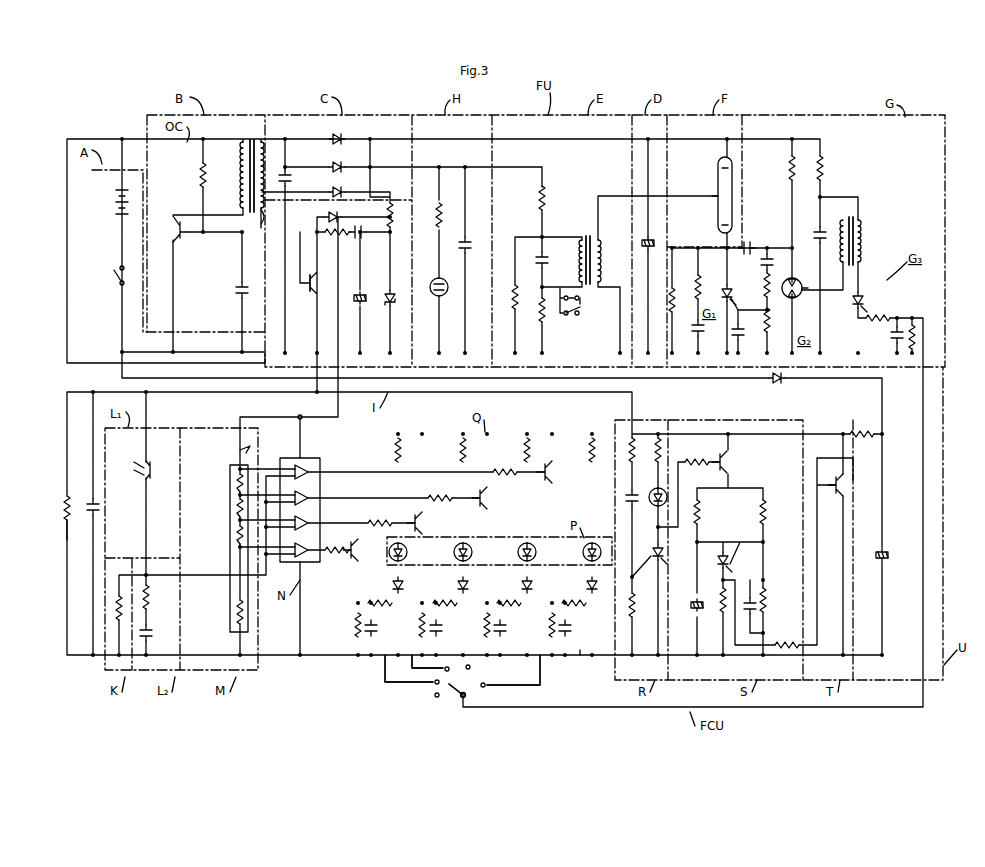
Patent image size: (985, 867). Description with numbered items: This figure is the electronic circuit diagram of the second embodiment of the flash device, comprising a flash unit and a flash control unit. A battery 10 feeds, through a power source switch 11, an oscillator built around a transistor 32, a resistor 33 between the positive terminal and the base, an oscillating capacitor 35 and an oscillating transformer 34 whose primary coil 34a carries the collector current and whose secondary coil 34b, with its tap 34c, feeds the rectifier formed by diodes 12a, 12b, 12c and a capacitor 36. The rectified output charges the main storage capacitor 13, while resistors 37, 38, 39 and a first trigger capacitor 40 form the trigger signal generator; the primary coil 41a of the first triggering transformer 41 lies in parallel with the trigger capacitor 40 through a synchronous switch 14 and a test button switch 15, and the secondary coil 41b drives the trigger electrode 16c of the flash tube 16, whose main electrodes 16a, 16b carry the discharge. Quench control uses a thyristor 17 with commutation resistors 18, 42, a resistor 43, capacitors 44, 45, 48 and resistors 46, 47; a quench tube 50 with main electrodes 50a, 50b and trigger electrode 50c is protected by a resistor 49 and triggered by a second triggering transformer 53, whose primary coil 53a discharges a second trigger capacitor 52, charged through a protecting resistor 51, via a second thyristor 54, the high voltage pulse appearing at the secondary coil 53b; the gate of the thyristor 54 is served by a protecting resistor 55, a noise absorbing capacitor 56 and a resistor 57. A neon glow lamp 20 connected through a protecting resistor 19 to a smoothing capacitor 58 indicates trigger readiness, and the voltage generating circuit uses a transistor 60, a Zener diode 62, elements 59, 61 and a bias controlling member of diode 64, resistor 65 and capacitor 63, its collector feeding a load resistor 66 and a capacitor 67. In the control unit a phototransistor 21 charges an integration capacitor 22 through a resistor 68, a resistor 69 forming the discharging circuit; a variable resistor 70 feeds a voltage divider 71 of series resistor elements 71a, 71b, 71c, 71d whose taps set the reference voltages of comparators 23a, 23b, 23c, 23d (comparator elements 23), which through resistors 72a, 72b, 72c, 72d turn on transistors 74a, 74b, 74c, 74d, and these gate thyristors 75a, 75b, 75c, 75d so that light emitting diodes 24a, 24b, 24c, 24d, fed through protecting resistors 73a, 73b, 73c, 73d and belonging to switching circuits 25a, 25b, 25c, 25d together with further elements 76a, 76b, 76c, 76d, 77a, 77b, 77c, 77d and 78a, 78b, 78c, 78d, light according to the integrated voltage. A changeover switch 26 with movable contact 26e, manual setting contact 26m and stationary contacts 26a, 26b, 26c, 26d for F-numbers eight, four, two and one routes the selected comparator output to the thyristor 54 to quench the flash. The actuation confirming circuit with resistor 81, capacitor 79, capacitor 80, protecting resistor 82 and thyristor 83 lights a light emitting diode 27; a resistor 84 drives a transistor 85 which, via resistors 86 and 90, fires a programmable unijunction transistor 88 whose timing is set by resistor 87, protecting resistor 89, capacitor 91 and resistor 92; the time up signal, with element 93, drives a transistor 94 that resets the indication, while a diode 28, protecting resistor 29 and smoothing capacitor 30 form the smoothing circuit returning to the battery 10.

The battery 10 is at (116, 206).
The power source switch 11 is at (119, 284).
The diode 12a is at (339, 139).
The diode 12b is at (339, 167).
The diode 12c is at (339, 192).
The main storage capacitor 13 is at (650, 240).
The switch 14 is at (572, 315).
The test button switch 15 is at (581, 298).
The flash tube 16 is at (732, 200).
The main current conducting electrode 16a is at (732, 160).
The electrode 16b is at (718, 230).
The trigger electrode 16c is at (717, 178).
The thyristor 17 is at (722, 292).
The commutation resistor 18 is at (747, 246).
The protecting resistor 19 is at (436, 212).
The neon glow lamp 20 is at (431, 286).
The phototransistor 21 is at (152, 470).
The integration capacitor 22 is at (149, 633).
The comparator circuit 23 is at (300, 458).
The comparator 23a is at (310, 472).
The comparator 23b is at (310, 498).
The comparator 23c is at (310, 523).
The comparator 23d is at (310, 550).
The light emitting diode 24a is at (584, 556).
The light emitting diode 24b is at (519, 556).
The light emitting diode 24c is at (455, 556).
The light emitting diode 24d is at (390, 558).
The switching circuit 25a is at (580, 656).
The switching circuit 25b is at (520, 668).
The switching circuit 25c is at (415, 672).
The switching circuit 25d is at (385, 672).
The changeover switch 26 is at (460, 702).
The stationary contact 26a is at (485, 687).
The stationary contact 26b is at (470, 668).
The stationary contact 26c is at (448, 672).
The stationary contact 26d is at (434, 684).
The movable contact 26e is at (462, 700).
The manual operation setting contact 26m is at (435, 698).
The light emitting diode 27 is at (654, 505).
The diode 28 is at (779, 383).
The protecting resistor 29 is at (862, 430).
The smoothing capacitor 30 is at (878, 560).
The transistor 32 is at (178, 232).
The resistor 33 is at (199, 180).
The oscillating transformer 34 is at (252, 140).
The primary coil 34a is at (240, 172).
The secondary coil 34b is at (263, 168).
The tap 34c is at (262, 228).
The oscillating capacitor 35 is at (236, 290).
The capacitor 36 is at (291, 178).
The resistor 37 is at (538, 200).
The by-passing resistor 38 is at (513, 304).
The resistor 39 is at (538, 316).
The first trigger capacitor 40 is at (536, 262).
The first triggering transformer 41 is at (587, 236).
The primary coil 41a is at (578, 262).
The secondary coil 41b is at (602, 262).
The commutation resistor 42 is at (673, 304).
The resistor 43 is at (696, 280).
The capacitor 44 is at (695, 332).
The capacitor 45 is at (760, 262).
The resistor 46 is at (763, 285).
The resistor 47 is at (770, 324).
The capacitor 48 is at (739, 330).
The protecting resistor 49 is at (788, 170).
The quench tube 50 is at (786, 296).
The main current conducting electrode 50a is at (788, 279).
The main current conducting electrode 50b is at (800, 295).
The trigger electrode 50c is at (796, 283).
The protecting resistor 51 is at (824, 168).
The second trigger capacitor 52 is at (817, 234).
The second triggering transformer 53 is at (853, 214).
The primary coil 53a is at (862, 240).
The secondary coil 53b is at (842, 222).
The second thyristor 54 is at (862, 300).
The protecting resistor 55 is at (878, 314).
The capacitor 56 is at (893, 336).
The resistor 57 is at (912, 324).
The smoothing capacitor 58 is at (470, 240).
The resistor 59 is at (390, 225).
The transistor 60 is at (310, 288).
The zener diode 61 is at (358, 304).
The Zener diode 62 is at (391, 306).
The capacitor 63 is at (358, 228).
The diode 64 is at (325, 214).
The resistor 65 is at (337, 237).
The load resistor 66 is at (66, 530).
The capacitor 67 is at (70, 505).
The resistor 68 is at (149, 598).
The resistor 69 is at (117, 596).
The variable resistor 70 is at (238, 452).
The voltage divider 71 is at (228, 553).
The resistor element 71a is at (236, 480).
The resistor element 71b is at (236, 507).
The resistor element 71c is at (236, 534).
The resistor element 71d is at (236, 612).
The resistor 72a is at (505, 474).
The resistor 72b is at (446, 490).
The resistor 72c is at (385, 516).
The resistor 72d is at (337, 554).
The protecting resistor 73a is at (589, 452).
The protecting resistor 73b is at (524, 452).
The protecting resistor 73c is at (460, 452).
The protecting resistor 73d is at (395, 452).
The transistor 74a is at (552, 472).
The transistor 74b is at (487, 500).
The transistor 74c is at (421, 523).
The transistor 74d is at (355, 550).
The thyristor 75a is at (587, 586).
The thyristor 75b is at (522, 586).
The thyristor 75c is at (458, 586).
The thyristor 75d is at (393, 586).
The resistor 76a is at (572, 601).
The resistor 76b is at (507, 601).
The resistor 76c is at (443, 601).
The resistor 76d is at (378, 601).
The capacitor 77a is at (567, 628).
The capacitor 77b is at (502, 628).
The capacitor 77c is at (438, 628).
The capacitor 77d is at (368, 628).
The resistor 78a is at (550, 618).
The resistor 78b is at (485, 618).
The resistor 78c is at (420, 618).
The resistor 78d is at (356, 616).
The capacitor 79 is at (629, 450).
The capacitor 80 is at (627, 498).
The resistor 81 is at (636, 610).
The protecting resistor 82 is at (656, 456).
The thyristor 83 is at (664, 554).
The resistor 84 is at (697, 458).
The transistor 85 is at (729, 464).
The resistor 86 is at (700, 512).
The resistor 87 is at (695, 609).
The programmable unijunction transistor 88 is at (729, 560).
The protecting resistor 89 is at (720, 608).
The resistor 90 is at (767, 510).
The capacitor 91 is at (755, 610).
The resistor 92 is at (766, 598).
The resistor 93 is at (787, 642).
The transistor 94 is at (833, 484).